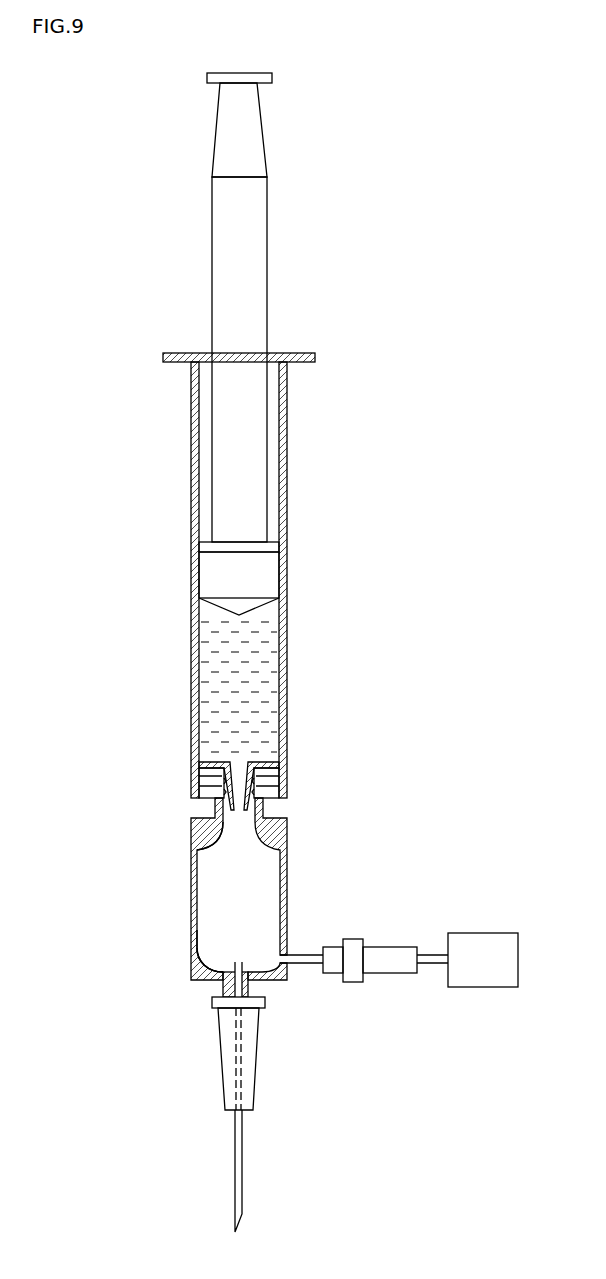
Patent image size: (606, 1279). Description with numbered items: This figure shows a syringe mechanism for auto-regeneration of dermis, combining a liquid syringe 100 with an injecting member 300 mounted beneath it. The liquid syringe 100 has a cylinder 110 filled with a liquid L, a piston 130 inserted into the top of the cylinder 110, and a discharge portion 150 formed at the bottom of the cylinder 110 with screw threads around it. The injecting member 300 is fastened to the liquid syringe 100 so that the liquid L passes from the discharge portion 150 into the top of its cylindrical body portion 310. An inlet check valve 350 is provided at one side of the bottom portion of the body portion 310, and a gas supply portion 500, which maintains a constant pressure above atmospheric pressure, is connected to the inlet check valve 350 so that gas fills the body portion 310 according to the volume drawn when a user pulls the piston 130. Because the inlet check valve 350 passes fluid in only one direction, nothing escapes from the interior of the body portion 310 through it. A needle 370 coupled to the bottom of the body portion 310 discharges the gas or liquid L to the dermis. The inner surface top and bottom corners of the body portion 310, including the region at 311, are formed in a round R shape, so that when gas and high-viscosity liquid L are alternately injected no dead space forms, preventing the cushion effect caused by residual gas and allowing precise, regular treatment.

The liquid syringe 100 is at (232, 442).
The cylinder 110 is at (283, 476).
The piston 130 is at (254, 291).
The discharge portion 150 is at (210, 787).
The liquid L is at (212, 700).
The injecting member 300 is at (294, 1015).
The body portion 310 is at (290, 868).
The curved inner surface 311 is at (190, 918).
The round shape R is at (190, 856).
The inlet check valve 350 is at (386, 972).
The needle 370 is at (240, 1165).
The gas supply portion 500 is at (492, 975).